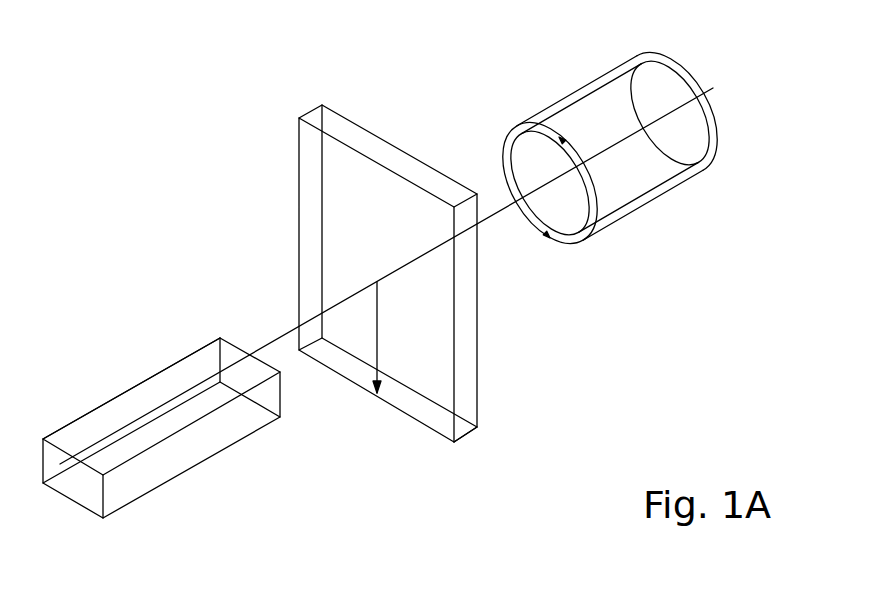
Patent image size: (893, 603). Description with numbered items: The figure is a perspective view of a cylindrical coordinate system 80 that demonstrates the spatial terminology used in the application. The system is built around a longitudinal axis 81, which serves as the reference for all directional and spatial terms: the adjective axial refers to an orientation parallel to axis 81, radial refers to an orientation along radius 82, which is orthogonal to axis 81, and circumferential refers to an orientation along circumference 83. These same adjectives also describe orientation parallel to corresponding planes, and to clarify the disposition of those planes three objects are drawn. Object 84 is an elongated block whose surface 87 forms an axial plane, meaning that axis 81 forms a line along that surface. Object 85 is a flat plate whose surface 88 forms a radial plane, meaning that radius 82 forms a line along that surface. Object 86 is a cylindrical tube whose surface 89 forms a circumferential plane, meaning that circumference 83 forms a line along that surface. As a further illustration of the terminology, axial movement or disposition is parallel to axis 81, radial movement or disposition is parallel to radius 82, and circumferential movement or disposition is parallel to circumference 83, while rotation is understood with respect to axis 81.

The cylindrical coordinate system 80 is at (258, 159).
The longitudinal axis 81 is at (576, 147).
The radius 82 is at (377, 332).
The circumference 83 is at (500, 152).
The object 84 is at (128, 508).
The object 85 is at (487, 433).
The object 86 is at (631, 214).
The surface 87 is at (123, 408).
The surface 88 is at (313, 232).
The surface 89 is at (577, 90).